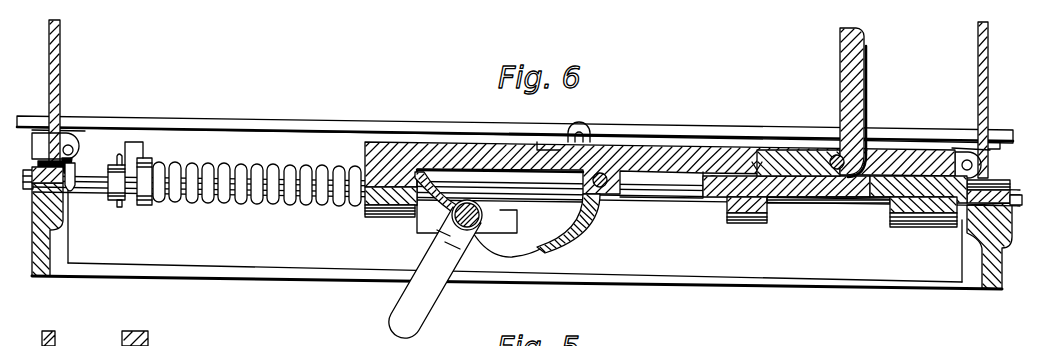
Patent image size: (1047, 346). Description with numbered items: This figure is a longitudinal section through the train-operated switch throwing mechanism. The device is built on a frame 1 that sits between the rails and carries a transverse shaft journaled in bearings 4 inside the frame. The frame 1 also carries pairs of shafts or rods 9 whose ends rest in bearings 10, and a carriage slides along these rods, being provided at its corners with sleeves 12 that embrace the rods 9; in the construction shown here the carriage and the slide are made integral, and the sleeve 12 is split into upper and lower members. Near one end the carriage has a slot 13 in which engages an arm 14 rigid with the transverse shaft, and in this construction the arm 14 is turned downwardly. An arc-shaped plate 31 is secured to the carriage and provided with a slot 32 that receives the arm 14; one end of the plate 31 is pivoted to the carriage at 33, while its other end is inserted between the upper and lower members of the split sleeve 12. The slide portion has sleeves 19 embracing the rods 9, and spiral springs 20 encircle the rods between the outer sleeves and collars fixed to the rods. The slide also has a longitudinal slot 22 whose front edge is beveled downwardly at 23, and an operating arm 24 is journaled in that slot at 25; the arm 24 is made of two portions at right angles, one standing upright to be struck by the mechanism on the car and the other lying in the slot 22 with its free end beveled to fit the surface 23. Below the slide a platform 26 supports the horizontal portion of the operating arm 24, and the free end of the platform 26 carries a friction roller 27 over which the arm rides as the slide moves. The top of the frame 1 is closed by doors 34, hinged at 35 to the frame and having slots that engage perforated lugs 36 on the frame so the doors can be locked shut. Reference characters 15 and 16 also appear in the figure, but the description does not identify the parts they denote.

The frame 1 is at (655, 121).
The bearings 4 is at (516, 229).
The shafts or rods 9 is at (100, 188).
The bearings 10 is at (1013, 203).
The sleeves 12 is at (383, 217).
The slot 13 is at (145, 166).
The arm 14 is at (418, 263).
The spring 15 is at (204, 164).
The pivot block 16 is at (78, 152).
The sleeves 19 is at (912, 228).
The spiral springs 20 is at (37, 164).
The longitudinal slot 22 is at (870, 152).
The beveled edge 23 is at (757, 166).
The operating arm 24 is at (865, 84).
The journal 25 is at (834, 155).
The platform 26 is at (733, 215).
The friction roller 27 is at (70, 177).
The arc-shaped plate 31 is at (563, 229).
The slot 32 is at (530, 252).
The pivot 33 is at (602, 189).
The doors 34 is at (60, 80).
The hinges 35 is at (72, 128).
The perforated lugs 36 is at (582, 128).